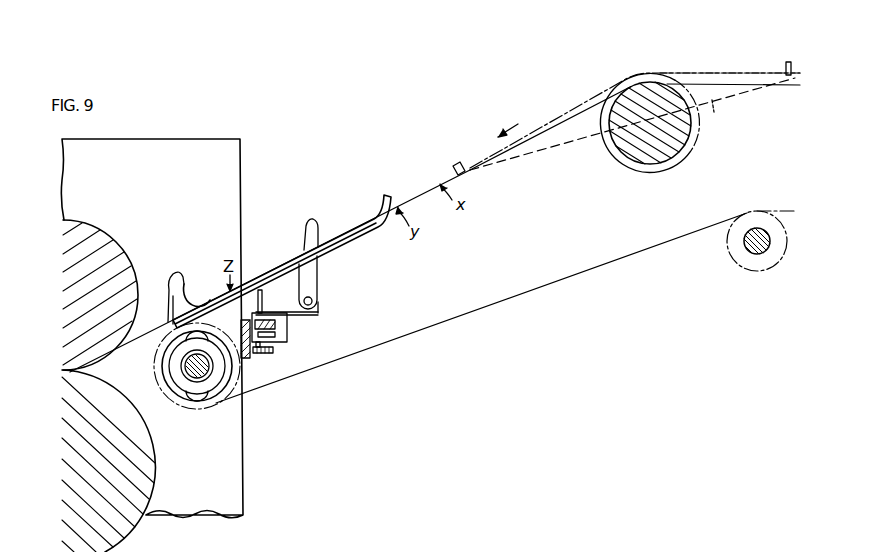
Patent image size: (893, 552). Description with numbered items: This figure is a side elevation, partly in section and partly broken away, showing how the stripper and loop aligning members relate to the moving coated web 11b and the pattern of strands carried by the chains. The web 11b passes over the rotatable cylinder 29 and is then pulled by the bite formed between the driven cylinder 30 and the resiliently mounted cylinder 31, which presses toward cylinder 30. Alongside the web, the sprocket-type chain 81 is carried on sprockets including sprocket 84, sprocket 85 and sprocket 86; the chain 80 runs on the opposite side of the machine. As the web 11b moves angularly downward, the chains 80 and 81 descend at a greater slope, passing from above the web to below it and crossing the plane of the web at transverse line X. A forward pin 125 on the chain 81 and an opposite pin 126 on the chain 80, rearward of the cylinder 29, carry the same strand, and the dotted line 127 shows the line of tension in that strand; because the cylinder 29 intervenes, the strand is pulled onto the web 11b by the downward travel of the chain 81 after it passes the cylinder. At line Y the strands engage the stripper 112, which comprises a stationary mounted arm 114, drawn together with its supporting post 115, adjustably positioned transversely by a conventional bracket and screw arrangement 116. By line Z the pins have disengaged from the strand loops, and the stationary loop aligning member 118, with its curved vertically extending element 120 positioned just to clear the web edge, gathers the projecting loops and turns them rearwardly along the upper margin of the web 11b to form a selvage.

The cylinder 30 is at (72, 242).
The cylinder 31 is at (66, 416).
The sprocket 85 is at (200, 404).
The stripper 112 is at (355, 218).
The arm 114 is at (307, 216).
The curved vertically extending element 120 is at (172, 272).
The loop aligning member 118 is at (187, 280).
The support post 115 is at (319, 278).
The bracket and screw arrangement 116 is at (292, 329).
The forward pin 125 is at (456, 160).
The chain 81 is at (581, 109).
The coated web 11b is at (560, 138).
The cylinder 29 is at (642, 152).
The sprocket 84 is at (658, 170).
The chain 80 is at (727, 74).
The pin 126 is at (787, 62).
The dotted line 127 is at (714, 112).
The sprocket 86 is at (760, 254).